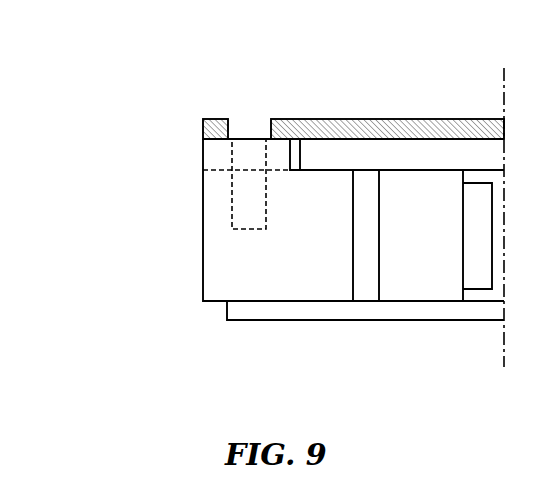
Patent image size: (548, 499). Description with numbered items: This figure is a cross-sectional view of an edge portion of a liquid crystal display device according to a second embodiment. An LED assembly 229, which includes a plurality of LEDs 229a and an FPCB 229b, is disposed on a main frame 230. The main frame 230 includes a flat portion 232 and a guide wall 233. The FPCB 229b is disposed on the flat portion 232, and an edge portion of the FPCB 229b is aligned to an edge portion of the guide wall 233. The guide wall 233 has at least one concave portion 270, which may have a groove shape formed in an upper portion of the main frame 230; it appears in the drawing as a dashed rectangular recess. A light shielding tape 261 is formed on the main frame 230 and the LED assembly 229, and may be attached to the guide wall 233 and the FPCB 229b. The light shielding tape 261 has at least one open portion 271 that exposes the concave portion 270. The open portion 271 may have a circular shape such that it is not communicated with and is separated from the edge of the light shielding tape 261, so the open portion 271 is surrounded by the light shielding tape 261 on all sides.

The LED assembly 229 is at (400, 377).
The LEDs 229a is at (413, 243).
The FPCB 229b is at (338, 155).
The main frame 230 is at (84, 148).
The flat portion 232 is at (292, 173).
The guide wall 233 is at (217, 157).
The light shielding tape 261 is at (405, 127).
The concave portion 270 is at (245, 153).
The open portion 271 is at (263, 122).